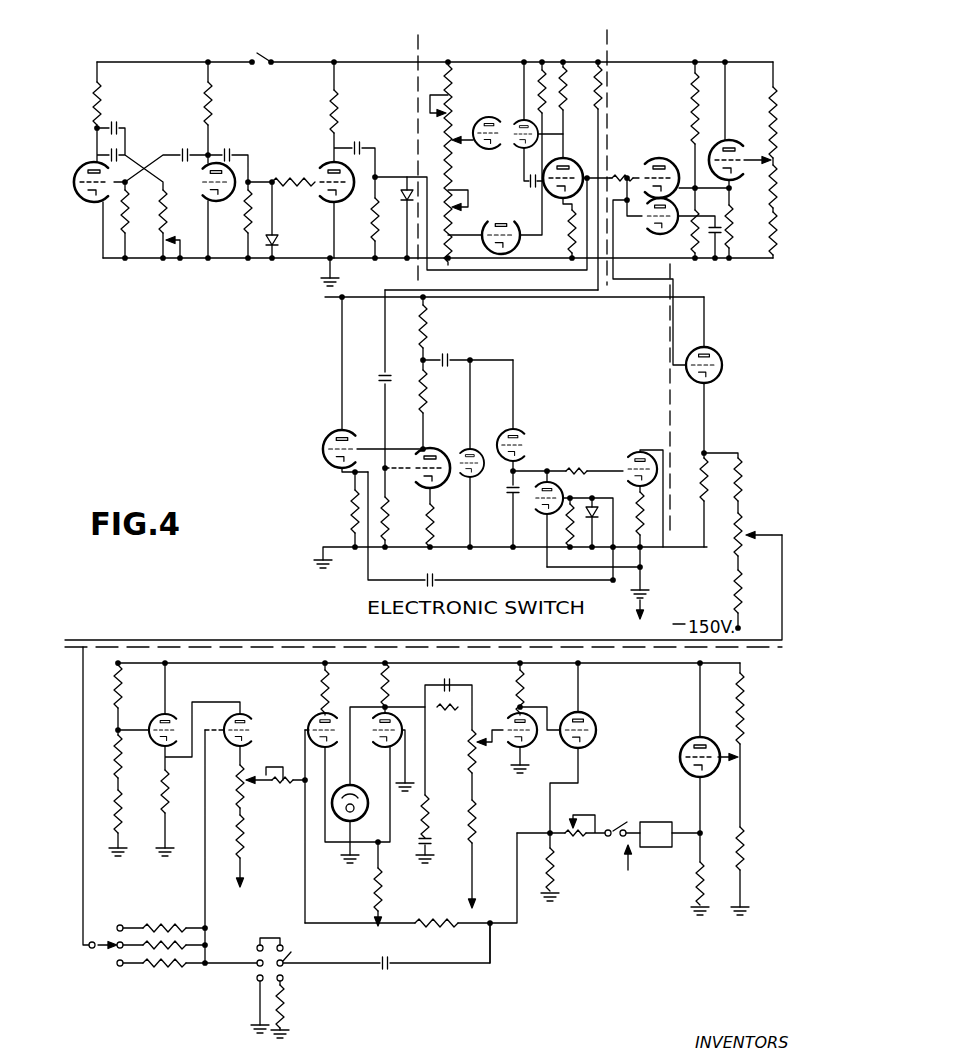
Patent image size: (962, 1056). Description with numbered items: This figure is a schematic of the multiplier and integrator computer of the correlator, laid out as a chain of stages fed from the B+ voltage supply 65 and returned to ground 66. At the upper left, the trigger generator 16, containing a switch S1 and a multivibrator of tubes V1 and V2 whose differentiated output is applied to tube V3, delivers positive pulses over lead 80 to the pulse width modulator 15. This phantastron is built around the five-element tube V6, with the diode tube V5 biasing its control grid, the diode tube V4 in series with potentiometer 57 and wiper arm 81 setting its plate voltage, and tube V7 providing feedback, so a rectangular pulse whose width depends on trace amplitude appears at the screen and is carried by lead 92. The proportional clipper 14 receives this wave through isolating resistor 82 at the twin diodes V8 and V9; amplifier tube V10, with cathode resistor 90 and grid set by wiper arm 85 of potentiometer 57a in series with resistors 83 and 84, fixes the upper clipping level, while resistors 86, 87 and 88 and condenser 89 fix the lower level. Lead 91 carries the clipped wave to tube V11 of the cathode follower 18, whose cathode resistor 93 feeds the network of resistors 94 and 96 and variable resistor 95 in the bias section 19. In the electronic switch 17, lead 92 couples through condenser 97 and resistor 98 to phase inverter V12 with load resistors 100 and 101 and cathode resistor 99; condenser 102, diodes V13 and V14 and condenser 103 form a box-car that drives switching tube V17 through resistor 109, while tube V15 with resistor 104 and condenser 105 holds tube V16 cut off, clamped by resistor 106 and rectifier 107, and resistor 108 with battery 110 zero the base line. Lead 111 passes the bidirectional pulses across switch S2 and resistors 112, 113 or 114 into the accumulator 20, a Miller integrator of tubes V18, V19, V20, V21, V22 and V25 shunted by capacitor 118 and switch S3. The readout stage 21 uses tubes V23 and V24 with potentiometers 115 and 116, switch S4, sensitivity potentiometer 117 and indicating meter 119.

The B+ voltage supply 65 is at (143, 60).
The ground 66 is at (323, 546).
The trigger generator 16 is at (157, 87).
The switch S1 is at (273, 60).
The multivibrator tube V1 is at (84, 170).
The multivibrator tube V2 is at (226, 202).
The tube V3 is at (318, 170).
The pulse width modulator 15 is at (520, 82).
The potentiometer 57 is at (443, 133).
The wiper arm 81 is at (470, 156).
The diode tube V4 is at (480, 120).
The feedback tube V7 is at (517, 125).
The diode tube V5 is at (500, 232).
The five-element tube V6 is at (573, 158).
The lead 80 is at (458, 272).
The lead 92 is at (537, 292).
The proportional clipper 14 is at (703, 82).
The isolating resistor 82 is at (621, 177).
The diode tube V8 is at (663, 170).
The diode tube V9 is at (653, 229).
The lead 91 is at (677, 286).
The resistor 86 is at (695, 108).
The resistor 88 is at (697, 228).
The resistor 87 is at (707, 127).
The amplifier tube V10 is at (737, 152).
The wiper arm 85 is at (740, 186).
The resistor 90 is at (735, 208).
The resistor 83 is at (773, 127).
The potentiometer 57a is at (774, 178).
The resistor 84 is at (775, 210).
The condenser 89 is at (717, 253).
The electronic switch 17 is at (513, 378).
The cathode follower tube V15 is at (333, 456).
The resistor 104 is at (353, 492).
The condenser 105 is at (427, 578).
The condenser 97 is at (385, 374).
The resistor 98 is at (389, 522).
The resistor 101 is at (427, 346).
The condenser 102 is at (457, 356).
The resistor 100 is at (424, 388).
The phase inverter tube V12 is at (430, 479).
The resistor 99 is at (430, 514).
The diode V13 is at (462, 451).
The diode V14 is at (523, 436).
The condenser 103 is at (511, 498).
The resistor 109 is at (585, 468).
The amplifier tube V16 is at (540, 481).
The resistor 106 is at (568, 522).
The rectifier 107 is at (578, 560).
The switching tube V17 is at (626, 460).
The resistor 108 is at (641, 506).
The battery 110 is at (633, 593).
The tube V11 is at (684, 356).
The cathode follower 18 is at (712, 392).
The resistor 93 is at (704, 480).
The resistor 94 is at (741, 477).
The variable resistor 95 is at (758, 541).
The resistor 96 is at (742, 606).
The bias network 19 is at (741, 522).
The lead 111 is at (340, 638).
The switch S2 is at (105, 952).
The resistor 112 is at (150, 927).
The resistor 113 is at (173, 948).
The resistor 114 is at (167, 977).
The tube V18 is at (169, 720).
The tube V19 is at (280, 694).
The tube V20 is at (341, 712).
The tube V21 is at (384, 727).
The tube V25 is at (333, 803).
The adjustable potentiometer 115 is at (468, 742).
The tube V22 is at (525, 737).
The amplifier tube V23 is at (593, 747).
The adjustable potentiometer 117 is at (580, 842).
The switch S4 is at (617, 829).
The indicating meter 119 is at (664, 853).
The readout stage 21 is at (637, 890).
The amplifier tube V24 is at (683, 747).
The adjustable potentiometer 116 is at (745, 758).
The switch S3 is at (285, 960).
The capacitor 118 is at (393, 962).
The accumulator 20 is at (460, 952).